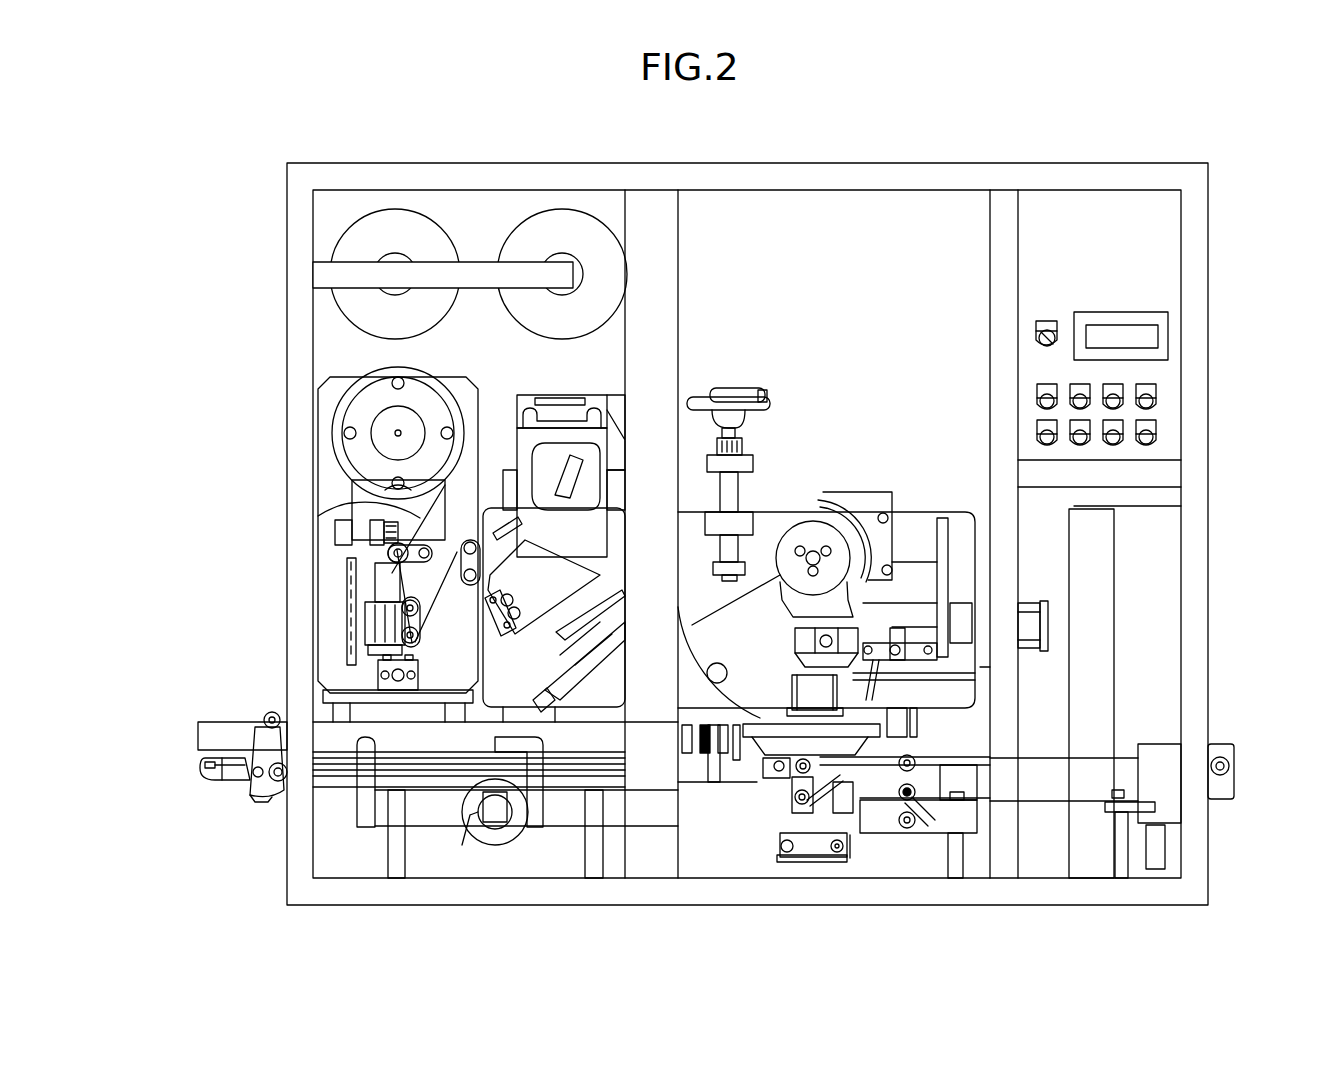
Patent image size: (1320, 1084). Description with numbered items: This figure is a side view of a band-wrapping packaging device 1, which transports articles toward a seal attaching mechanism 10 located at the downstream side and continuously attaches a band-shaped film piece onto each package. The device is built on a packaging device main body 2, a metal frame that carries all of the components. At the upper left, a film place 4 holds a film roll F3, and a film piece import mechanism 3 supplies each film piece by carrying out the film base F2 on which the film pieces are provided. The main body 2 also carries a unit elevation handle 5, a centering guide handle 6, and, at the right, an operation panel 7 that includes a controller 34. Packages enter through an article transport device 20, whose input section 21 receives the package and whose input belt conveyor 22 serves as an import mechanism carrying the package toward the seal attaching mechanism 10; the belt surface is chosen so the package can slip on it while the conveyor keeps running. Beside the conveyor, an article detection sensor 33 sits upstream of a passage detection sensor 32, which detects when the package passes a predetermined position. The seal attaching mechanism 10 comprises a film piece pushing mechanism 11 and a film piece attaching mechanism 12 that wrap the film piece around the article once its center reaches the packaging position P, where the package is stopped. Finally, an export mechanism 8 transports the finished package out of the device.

The band-wrapping packaging device 1 is at (373, 143).
The packaging device main body 2 is at (287, 186).
The film piece import mechanism 3 is at (800, 545).
The film place 4 is at (522, 273).
The unit elevation handle 5 is at (729, 391).
The centering guide handle 6 is at (495, 832).
The operation panel 7 is at (1160, 378).
The export mechanism 8 is at (1120, 755).
The seal attaching mechanism 10 is at (818, 447).
The film piece pushing mechanism 11 is at (877, 540).
The film piece attaching mechanism 12 is at (822, 802).
The article transport device 20 is at (188, 711).
The input section 21 is at (200, 758).
The input belt conveyor 22 is at (697, 767).
The passage detection sensor 32 is at (737, 745).
The article detection sensor 33 is at (683, 740).
The controller 34 is at (1163, 260).
The film base F2 is at (335, 514).
The film roll F3 is at (443, 378).
The packaging position P is at (813, 655).